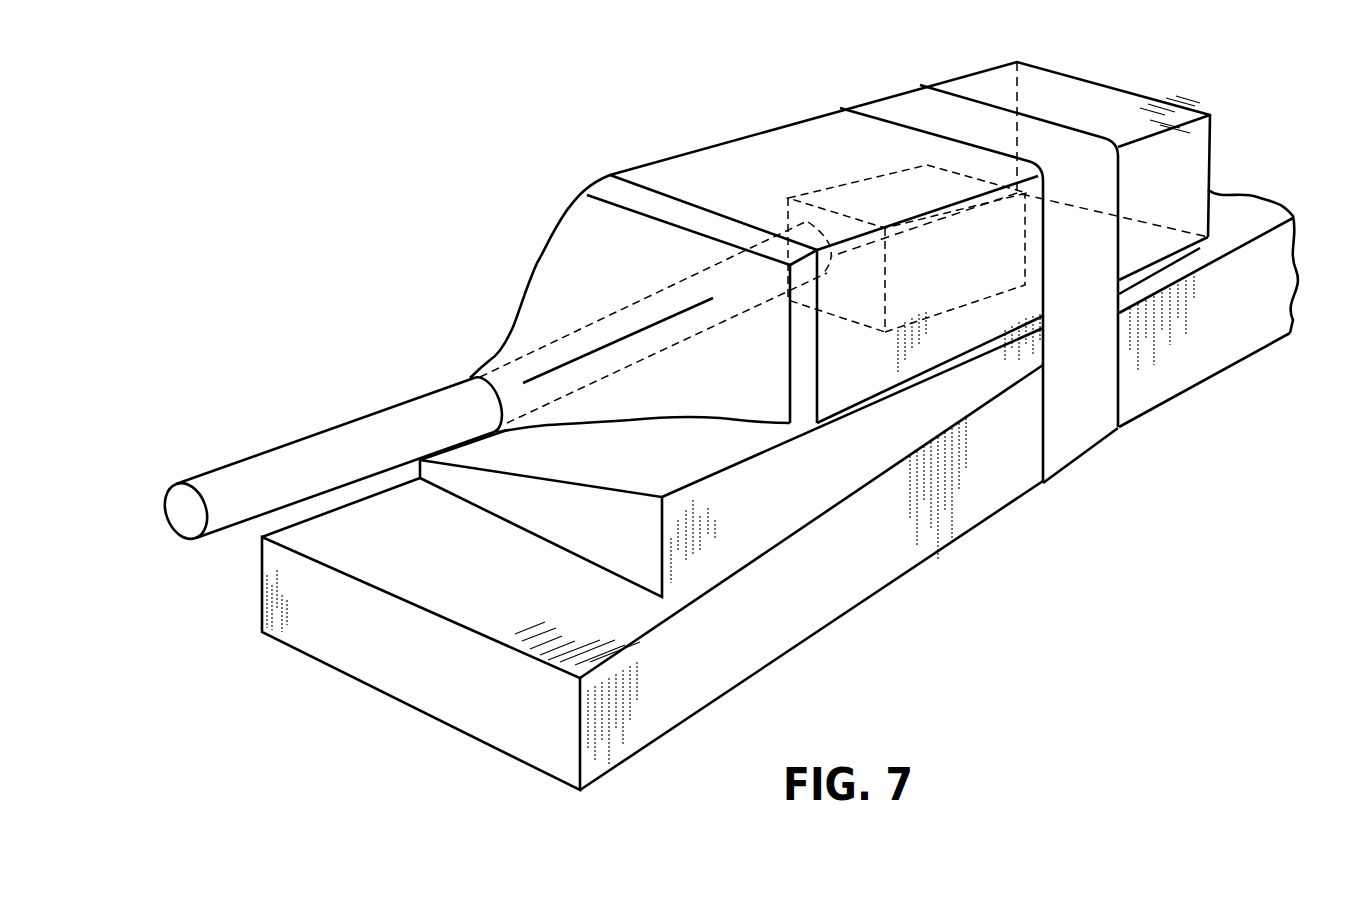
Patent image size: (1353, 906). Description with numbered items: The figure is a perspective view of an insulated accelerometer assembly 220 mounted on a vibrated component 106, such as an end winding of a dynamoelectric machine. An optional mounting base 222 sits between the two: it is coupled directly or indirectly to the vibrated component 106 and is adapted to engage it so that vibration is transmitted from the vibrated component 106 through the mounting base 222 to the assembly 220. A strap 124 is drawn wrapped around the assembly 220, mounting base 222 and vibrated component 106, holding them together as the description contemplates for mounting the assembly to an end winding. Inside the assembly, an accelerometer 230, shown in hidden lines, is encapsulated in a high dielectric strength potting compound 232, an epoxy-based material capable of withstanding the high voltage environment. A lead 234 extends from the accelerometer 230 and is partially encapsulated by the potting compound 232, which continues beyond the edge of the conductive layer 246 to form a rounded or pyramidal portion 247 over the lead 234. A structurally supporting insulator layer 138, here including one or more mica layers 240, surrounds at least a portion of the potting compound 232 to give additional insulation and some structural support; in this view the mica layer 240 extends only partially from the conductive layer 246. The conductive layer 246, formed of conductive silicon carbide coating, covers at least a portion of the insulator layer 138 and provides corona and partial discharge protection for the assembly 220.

The vibrated component 106 is at (697, 691).
The insulated accelerometer assembly 220 is at (611, 150).
The band strap 124 is at (903, 107).
The conductive layer 246 is at (1105, 123).
The accelerometer 230 is at (848, 200).
The structurally supporting insulator layer 138 is at (620, 285).
The mica layer 240 is at (673, 208).
The rounded or pyramidal portion 247 is at (520, 256).
The high dielectric strength potting compound 232 is at (643, 377).
The lead 234 is at (427, 417).
The mounting base 222 is at (793, 480).